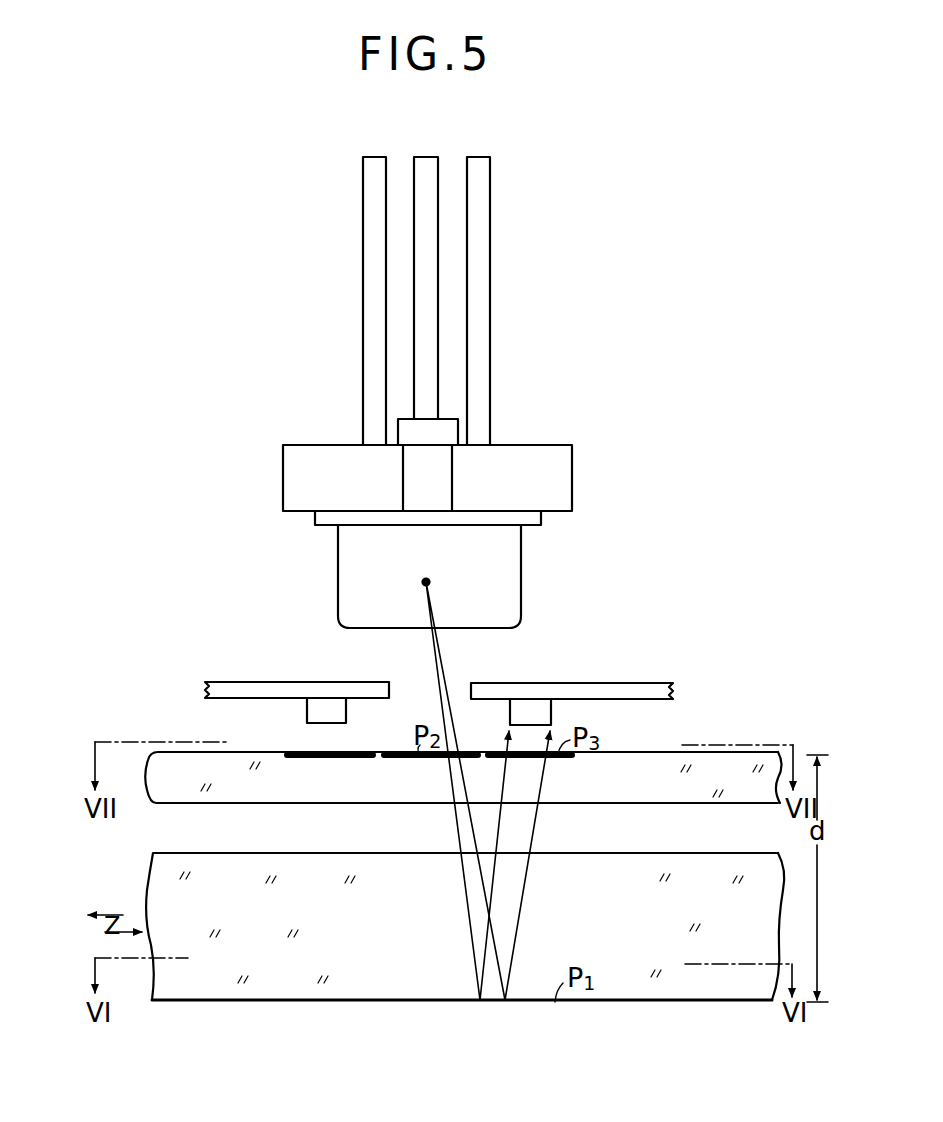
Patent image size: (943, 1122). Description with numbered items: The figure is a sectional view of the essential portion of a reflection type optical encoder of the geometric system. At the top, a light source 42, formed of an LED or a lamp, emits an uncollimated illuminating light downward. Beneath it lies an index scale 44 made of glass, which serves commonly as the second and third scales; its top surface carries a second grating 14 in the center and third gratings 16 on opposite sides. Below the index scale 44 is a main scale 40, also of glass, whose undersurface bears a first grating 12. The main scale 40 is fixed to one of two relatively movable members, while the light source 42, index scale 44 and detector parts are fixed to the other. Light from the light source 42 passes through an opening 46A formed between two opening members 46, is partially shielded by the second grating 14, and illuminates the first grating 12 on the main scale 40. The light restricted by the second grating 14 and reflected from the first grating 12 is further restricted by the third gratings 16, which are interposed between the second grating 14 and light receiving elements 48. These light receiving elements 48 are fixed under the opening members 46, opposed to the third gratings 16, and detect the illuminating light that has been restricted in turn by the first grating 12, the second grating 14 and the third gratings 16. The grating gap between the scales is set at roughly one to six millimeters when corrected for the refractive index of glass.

The light source 42 is at (428, 580).
The opening members 46 is at (232, 690).
The opening 46A is at (418, 687).
The light receiving elements 48 is at (343, 705).
The index scale 44 is at (727, 798).
The third gratings 16 is at (325, 760).
The second grating 14 is at (413, 758).
The main scale 40 is at (275, 980).
The first grating 12 is at (687, 993).